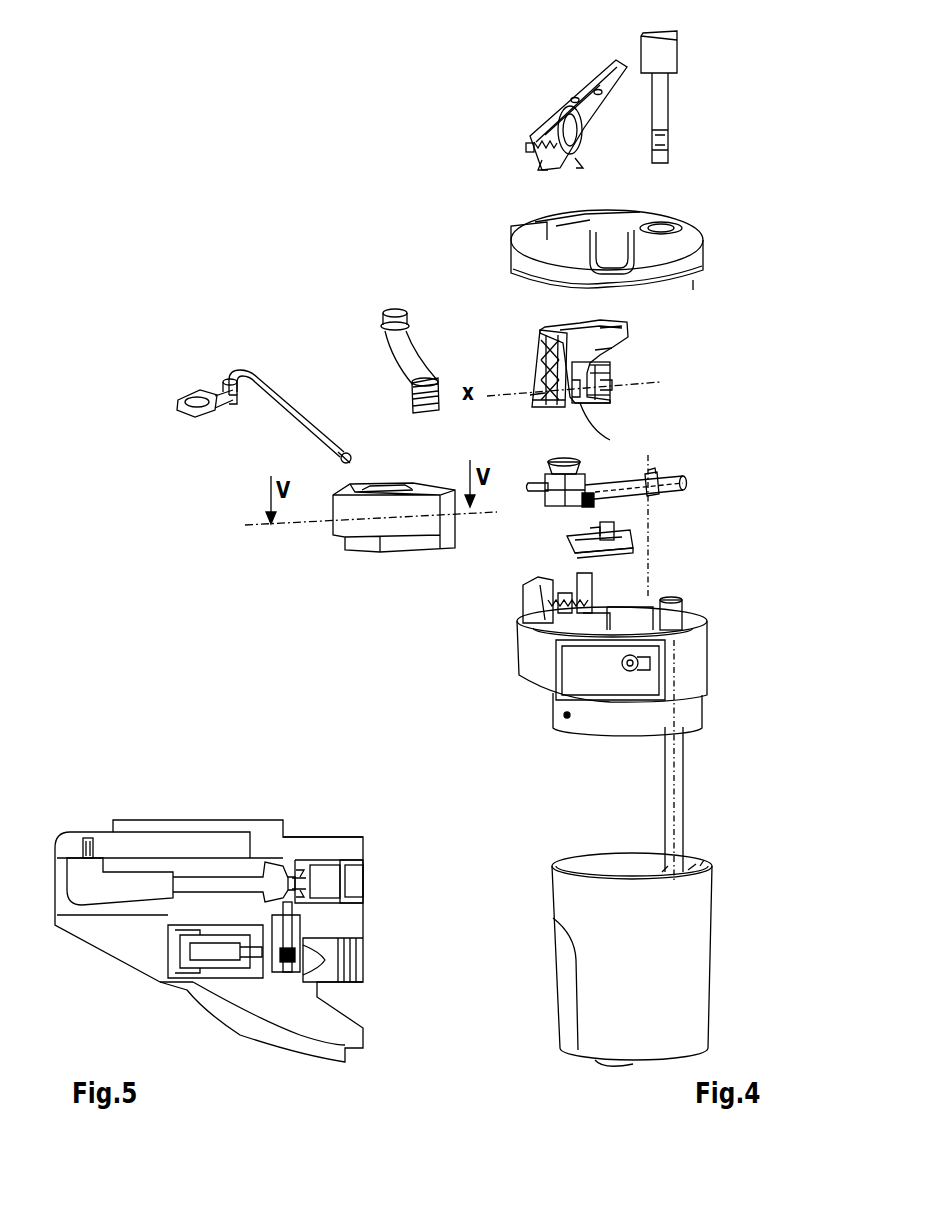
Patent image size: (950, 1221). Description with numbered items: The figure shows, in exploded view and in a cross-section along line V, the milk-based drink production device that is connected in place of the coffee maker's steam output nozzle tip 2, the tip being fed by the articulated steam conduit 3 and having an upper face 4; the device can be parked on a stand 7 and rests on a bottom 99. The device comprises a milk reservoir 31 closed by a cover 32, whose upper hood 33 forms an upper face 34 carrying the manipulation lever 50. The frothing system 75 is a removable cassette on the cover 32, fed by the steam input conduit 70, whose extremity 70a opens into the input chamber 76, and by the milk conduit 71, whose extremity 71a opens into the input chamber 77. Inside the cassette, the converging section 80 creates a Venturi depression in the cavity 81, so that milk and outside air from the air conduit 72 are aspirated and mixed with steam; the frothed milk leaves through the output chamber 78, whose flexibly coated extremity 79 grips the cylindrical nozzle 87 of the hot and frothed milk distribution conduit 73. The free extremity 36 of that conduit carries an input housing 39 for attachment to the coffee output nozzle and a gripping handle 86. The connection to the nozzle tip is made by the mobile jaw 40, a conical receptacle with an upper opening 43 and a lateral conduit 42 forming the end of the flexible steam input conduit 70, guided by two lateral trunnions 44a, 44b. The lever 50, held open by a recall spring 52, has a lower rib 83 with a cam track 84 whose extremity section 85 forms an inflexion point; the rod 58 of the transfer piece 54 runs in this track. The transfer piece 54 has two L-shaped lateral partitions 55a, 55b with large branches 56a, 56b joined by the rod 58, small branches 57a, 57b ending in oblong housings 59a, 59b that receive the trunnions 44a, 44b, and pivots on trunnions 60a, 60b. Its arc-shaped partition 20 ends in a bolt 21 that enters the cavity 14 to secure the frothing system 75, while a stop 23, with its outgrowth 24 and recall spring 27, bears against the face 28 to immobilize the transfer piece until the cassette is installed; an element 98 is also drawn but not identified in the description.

In FIG. 4, the steam output nozzle tip 2 is at (413, 407).
In FIG. 4, the articulated steam conduit 3 is at (400, 343).
In FIG. 4, the upper face 4 is at (410, 383).
In FIG. 4, the stand 7 is at (410, 388).
In FIG. 4, the cavity 14 is at (385, 487).
In FIG. 4, the partition 20 is at (610, 340).
In FIG. 4, the bolt 21 is at (610, 352).
In FIG. 4, the stop 23 is at (567, 545).
In FIG. 4, the outgrowth 24 is at (605, 550).
In FIG. 4, the recall spring 27 is at (627, 610).
In FIG. 4, the face 28 is at (607, 367).
In FIG. 4, the reservoir 31 is at (683, 945).
In FIG. 4, the cover 32 is at (693, 662).
In FIG. 4, the upper hood 33 is at (688, 250).
In FIG. 4, the upper face 34 is at (627, 222).
In FIG. 4, the free extremity 36 is at (233, 413).
In FIG. 4, the input housing 39 is at (228, 380).
In FIG. 4, the mobile jaw 40 is at (552, 472).
In FIG. 4, the lateral conduit 42 is at (607, 507).
In FIG. 4, the upper opening 43 is at (563, 467).
In FIG. 4, the lateral trunnion 44a is at (540, 478).
In FIG. 4, the lateral trunnion 44b is at (683, 483).
In FIG. 4, the manipulation lever 50 is at (562, 95).
In FIG. 4, the recall spring 52 is at (547, 163).
In FIG. 4, the transfer piece 54 is at (610, 332).
In FIG. 4, the lateral partition 55a is at (530, 392).
In FIG. 4, the lateral partition 55b is at (607, 398).
In FIG. 4, the large branch 56a is at (543, 397).
In FIG. 4, the large branch 56b is at (607, 358).
In FIG. 4, the small branch 57a is at (523, 383).
In FIG. 4, the small branch 57b is at (607, 377).
In FIG. 4, the rod 58 is at (573, 323).
In FIG. 4, the oblong housing 59a is at (510, 390).
In FIG. 4, the oblong housing 59b is at (572, 403).
In FIG. 4, the trunnion 60a is at (587, 410).
In FIG. 4, the trunnion 60b is at (607, 390).
In FIG. 4, the steam input conduit 70 is at (633, 493).
In FIG. 4, the extremity 70a is at (630, 663).
In FIG. 4, the milk conduit 71 is at (676, 765).
In FIG. 4, the extremity 71a is at (633, 668).
In FIG. 5, the air conduit 72 is at (257, 965).
In FIG. 4, the hot and frothed milk distribution conduit 73 is at (270, 395).
In FIG. 4, the frothing system 75 is at (415, 540).
In FIG. 5, the frothing system 75 is at (220, 745).
In FIG. 5, the input chamber 76 is at (348, 885).
In FIG. 5, the input chamber 77 is at (328, 960).
In FIG. 5, the output chamber 78 is at (115, 883).
In FIG. 5, the extremity 79 is at (77, 832).
In FIG. 5, the converging section 80 is at (303, 880).
In FIG. 5, the cavity 81 is at (278, 877).
In FIG. 4, the lower rib 83 is at (540, 133).
In FIG. 4, the cam track 84 is at (558, 128).
In FIG. 4, the extremity section 85 is at (565, 115).
In FIG. 4, the gripping handle 86 is at (177, 397).
In FIG. 4, the cylindrical nozzle 87 is at (333, 455).
In FIG. 4, the seal ring 98 is at (412, 395).
In FIG. 4, the bottom 99 is at (600, 1068).